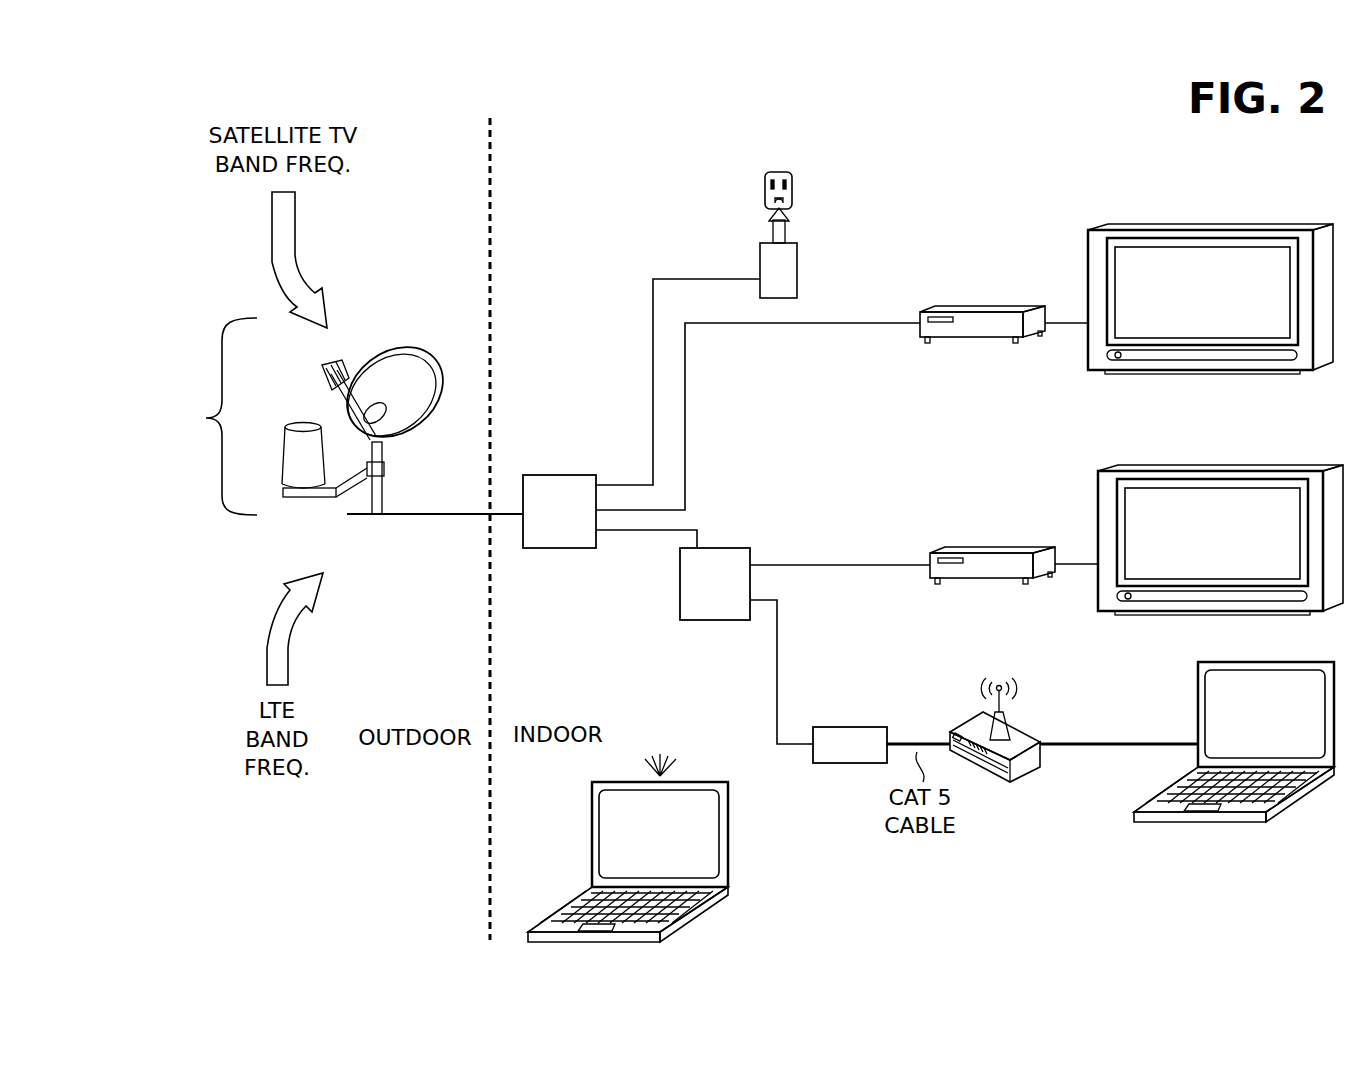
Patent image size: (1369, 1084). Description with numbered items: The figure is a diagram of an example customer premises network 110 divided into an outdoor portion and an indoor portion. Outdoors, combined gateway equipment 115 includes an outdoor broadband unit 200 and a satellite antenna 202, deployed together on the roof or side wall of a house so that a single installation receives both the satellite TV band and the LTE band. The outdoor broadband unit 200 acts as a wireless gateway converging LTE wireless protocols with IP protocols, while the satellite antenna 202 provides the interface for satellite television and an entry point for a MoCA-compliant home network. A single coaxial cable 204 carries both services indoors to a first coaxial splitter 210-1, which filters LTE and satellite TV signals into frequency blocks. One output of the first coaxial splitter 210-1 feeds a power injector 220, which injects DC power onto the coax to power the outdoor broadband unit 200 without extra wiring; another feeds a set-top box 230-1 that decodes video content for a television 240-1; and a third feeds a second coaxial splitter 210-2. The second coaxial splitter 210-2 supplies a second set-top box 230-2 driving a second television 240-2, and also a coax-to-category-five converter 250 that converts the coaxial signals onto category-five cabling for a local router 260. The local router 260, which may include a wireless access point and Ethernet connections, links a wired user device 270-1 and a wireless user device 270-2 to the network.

The customer premises network 110 is at (157, 70).
The combined gateway equipment 115 is at (161, 416).
The outdoor broadband unit 200 is at (288, 508).
The satellite antenna 202 is at (412, 365).
The coaxial cable 204 is at (416, 516).
The coaxial splitter 210-1 is at (558, 474).
The coaxial splitter 210-2 is at (735, 548).
The power injector 220 is at (758, 262).
The set-top box 230-1 is at (952, 306).
The set-top box 230-2 is at (962, 547).
The television 240-1 is at (1263, 229).
The television 240-2 is at (1272, 470).
The coax/Cat 5 converter 250 is at (867, 727).
The local router 260 is at (1020, 787).
The user device 270-1 is at (1198, 712).
The user device 270-2 is at (706, 902).